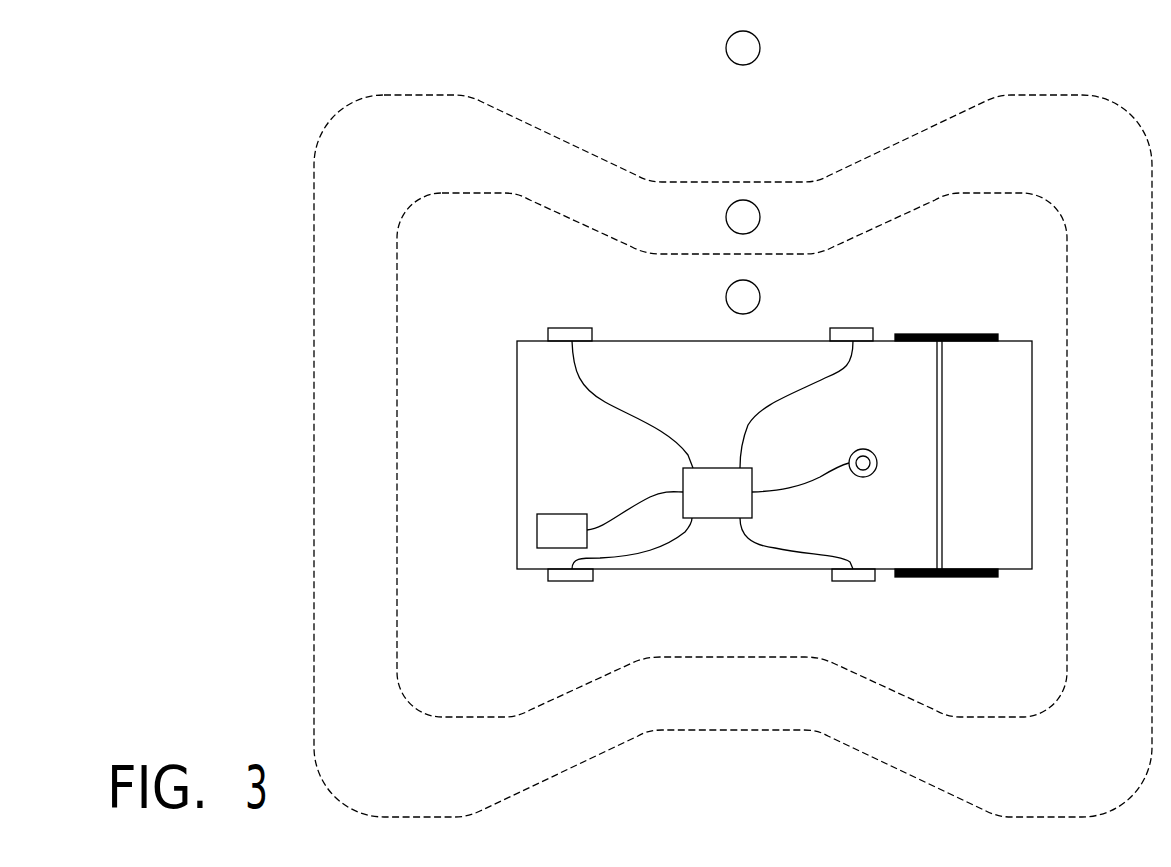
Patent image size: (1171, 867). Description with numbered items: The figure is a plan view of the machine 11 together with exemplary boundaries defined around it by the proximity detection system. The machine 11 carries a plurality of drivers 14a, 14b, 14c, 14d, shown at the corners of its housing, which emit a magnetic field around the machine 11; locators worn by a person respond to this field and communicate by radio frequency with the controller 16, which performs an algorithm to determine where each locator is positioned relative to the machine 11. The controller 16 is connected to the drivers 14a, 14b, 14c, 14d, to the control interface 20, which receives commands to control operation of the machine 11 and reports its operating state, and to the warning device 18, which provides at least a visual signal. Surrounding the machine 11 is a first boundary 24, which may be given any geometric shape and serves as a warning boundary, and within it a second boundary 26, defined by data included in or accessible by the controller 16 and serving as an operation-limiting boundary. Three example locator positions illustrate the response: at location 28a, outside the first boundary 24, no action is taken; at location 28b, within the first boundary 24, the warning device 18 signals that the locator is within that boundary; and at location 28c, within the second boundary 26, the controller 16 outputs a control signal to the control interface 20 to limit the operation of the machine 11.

The machine 11 is at (517, 455).
The driver 14a is at (578, 581).
The driver 14b is at (855, 581).
The driver 14c is at (870, 328).
The driver 14d is at (570, 328).
The controller 16 is at (718, 518).
The warning device 18 is at (865, 447).
The control interface 20 is at (537, 530).
The first boundary 24 is at (314, 243).
The second boundary 26 is at (397, 366).
The location 28a is at (760, 48).
The location 28b is at (726, 217).
The location 28c is at (760, 297).